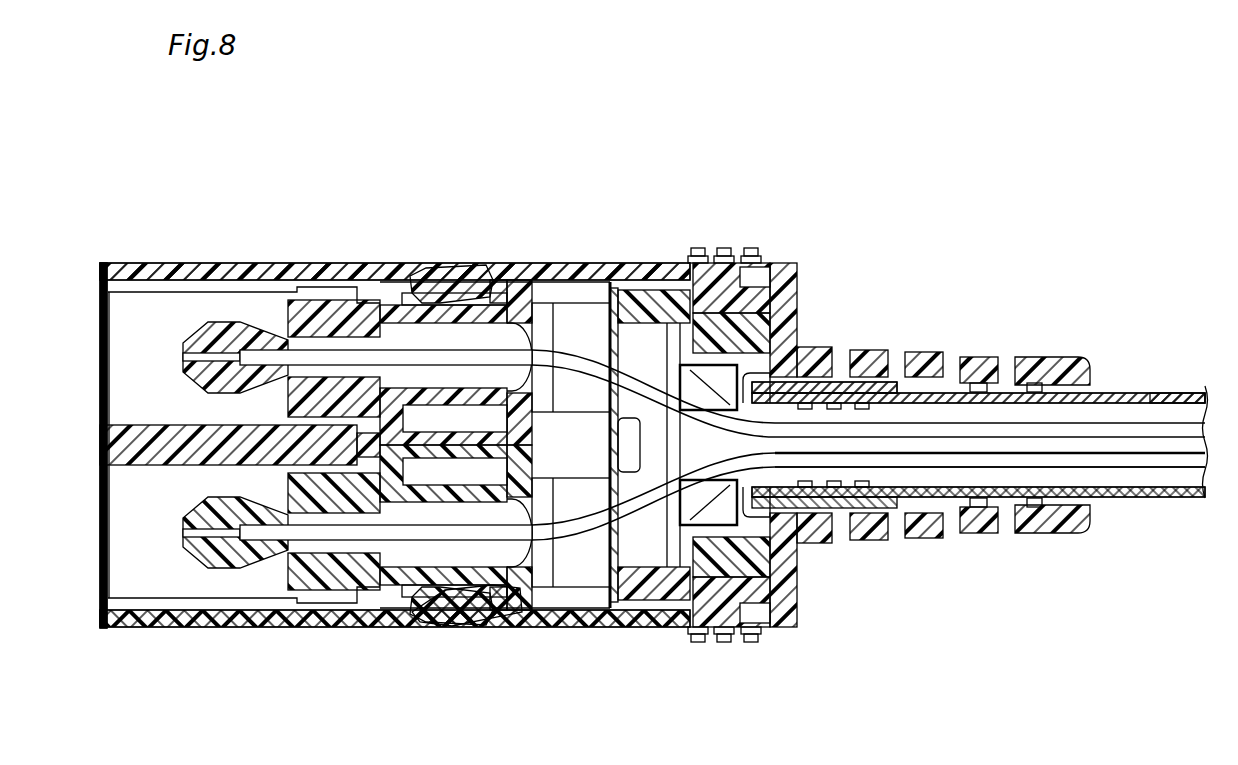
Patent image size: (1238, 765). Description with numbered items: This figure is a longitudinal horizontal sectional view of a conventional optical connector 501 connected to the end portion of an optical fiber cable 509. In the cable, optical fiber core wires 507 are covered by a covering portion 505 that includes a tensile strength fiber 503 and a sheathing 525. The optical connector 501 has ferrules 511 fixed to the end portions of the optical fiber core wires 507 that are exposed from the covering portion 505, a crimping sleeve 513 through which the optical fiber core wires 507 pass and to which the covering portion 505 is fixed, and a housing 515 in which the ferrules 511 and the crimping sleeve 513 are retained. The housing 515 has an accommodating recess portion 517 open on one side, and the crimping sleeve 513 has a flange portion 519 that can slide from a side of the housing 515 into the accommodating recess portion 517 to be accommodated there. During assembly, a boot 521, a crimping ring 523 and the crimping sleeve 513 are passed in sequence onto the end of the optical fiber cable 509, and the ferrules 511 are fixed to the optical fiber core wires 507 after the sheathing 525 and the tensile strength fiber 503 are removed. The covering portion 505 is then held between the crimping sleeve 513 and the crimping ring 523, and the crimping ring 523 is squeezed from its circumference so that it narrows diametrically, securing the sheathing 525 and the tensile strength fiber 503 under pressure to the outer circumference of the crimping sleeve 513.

The optical connector 501 is at (654, 424).
The tensile strength fiber 503 is at (1172, 395).
The covering portion 505 is at (1200, 312).
The optical fiber core wires 507 is at (318, 535).
The optical fiber cable 509 is at (1163, 508).
The ferrules 511 is at (250, 565).
The crimping sleeve 513 is at (803, 548).
The housing 515 is at (175, 634).
The accommodating recess portion 517 is at (720, 330).
The flange portion 519 is at (727, 583).
The boot 521 is at (980, 548).
The crimping ring 523 is at (868, 522).
The sheathing 525 is at (1115, 392).